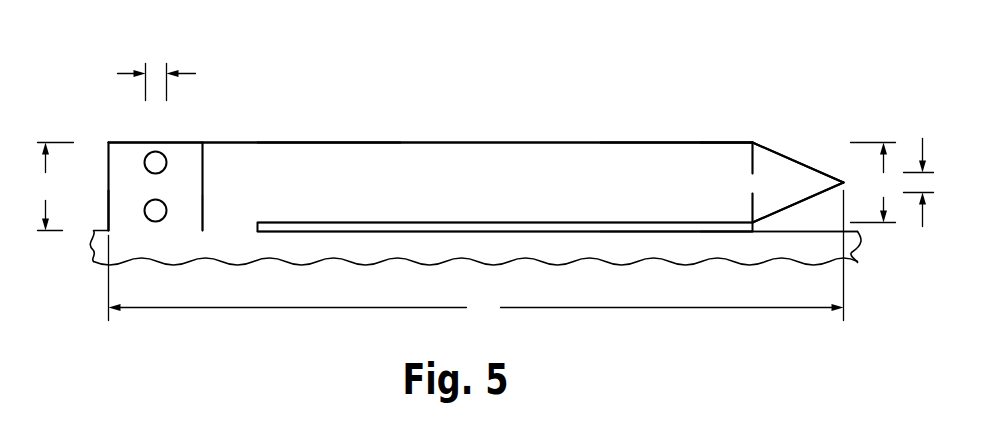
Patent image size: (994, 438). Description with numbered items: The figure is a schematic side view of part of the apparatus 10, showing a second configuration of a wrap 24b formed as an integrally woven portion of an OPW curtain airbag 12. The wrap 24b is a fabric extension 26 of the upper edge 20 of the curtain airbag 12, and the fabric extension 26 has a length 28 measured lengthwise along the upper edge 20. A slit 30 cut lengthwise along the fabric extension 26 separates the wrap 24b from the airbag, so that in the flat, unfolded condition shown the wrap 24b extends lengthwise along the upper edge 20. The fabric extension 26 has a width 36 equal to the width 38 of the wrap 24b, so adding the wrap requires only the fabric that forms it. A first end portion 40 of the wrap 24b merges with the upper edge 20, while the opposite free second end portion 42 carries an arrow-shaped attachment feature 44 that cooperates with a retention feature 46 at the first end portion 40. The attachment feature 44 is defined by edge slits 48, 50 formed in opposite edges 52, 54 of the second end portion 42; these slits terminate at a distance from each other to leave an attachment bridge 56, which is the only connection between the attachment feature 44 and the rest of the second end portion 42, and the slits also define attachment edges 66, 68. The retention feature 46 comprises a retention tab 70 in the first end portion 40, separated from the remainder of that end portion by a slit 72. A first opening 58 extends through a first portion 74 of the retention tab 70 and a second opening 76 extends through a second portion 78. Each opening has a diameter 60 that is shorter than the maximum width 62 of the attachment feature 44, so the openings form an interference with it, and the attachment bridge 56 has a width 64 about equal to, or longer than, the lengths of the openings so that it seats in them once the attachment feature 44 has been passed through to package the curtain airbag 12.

The apparatus 10 is at (571, 100).
The curtain airbag 12 is at (851, 253).
The upper edge 20 is at (337, 222).
The wrap 24b is at (517, 167).
The fabric extension 26 is at (428, 168).
The length 28 is at (476, 256).
The slit 30 is at (628, 223).
The width 36 is at (50, 187).
The width 38 is at (56, 187).
The first end portion 40 is at (218, 150).
The second end portion 42 is at (661, 160).
The attachment feature 44 is at (802, 182).
The retention feature 46 is at (115, 158).
The edge slit 48 is at (752, 142).
The edge slit 50 is at (752, 231).
The edge 52 is at (703, 142).
The edge 54 is at (685, 231).
The attachment bridge 56 is at (773, 170).
The first opening 58 is at (152, 152).
The diameter 60 is at (140, 81).
The maximum width 62 is at (874, 183).
The width 64 is at (919, 199).
The attachment edge 66 is at (752, 182).
The attachment edge 68 is at (753, 203).
The retention tab 70 is at (115, 210).
The slit 72 is at (202, 197).
The first portion 74 is at (187, 147).
The second opening 76 is at (155, 222).
The second portion 78 is at (189, 226).